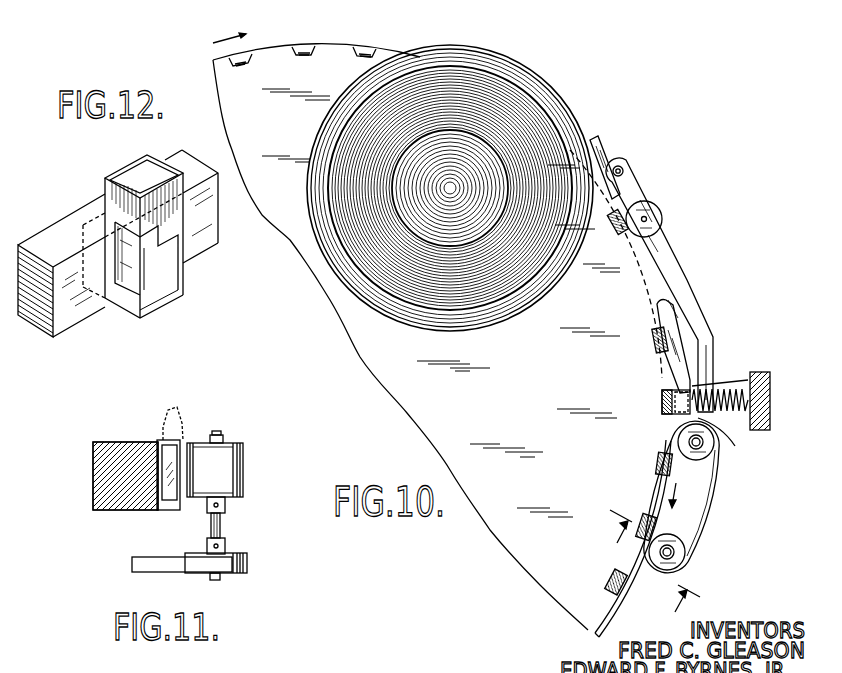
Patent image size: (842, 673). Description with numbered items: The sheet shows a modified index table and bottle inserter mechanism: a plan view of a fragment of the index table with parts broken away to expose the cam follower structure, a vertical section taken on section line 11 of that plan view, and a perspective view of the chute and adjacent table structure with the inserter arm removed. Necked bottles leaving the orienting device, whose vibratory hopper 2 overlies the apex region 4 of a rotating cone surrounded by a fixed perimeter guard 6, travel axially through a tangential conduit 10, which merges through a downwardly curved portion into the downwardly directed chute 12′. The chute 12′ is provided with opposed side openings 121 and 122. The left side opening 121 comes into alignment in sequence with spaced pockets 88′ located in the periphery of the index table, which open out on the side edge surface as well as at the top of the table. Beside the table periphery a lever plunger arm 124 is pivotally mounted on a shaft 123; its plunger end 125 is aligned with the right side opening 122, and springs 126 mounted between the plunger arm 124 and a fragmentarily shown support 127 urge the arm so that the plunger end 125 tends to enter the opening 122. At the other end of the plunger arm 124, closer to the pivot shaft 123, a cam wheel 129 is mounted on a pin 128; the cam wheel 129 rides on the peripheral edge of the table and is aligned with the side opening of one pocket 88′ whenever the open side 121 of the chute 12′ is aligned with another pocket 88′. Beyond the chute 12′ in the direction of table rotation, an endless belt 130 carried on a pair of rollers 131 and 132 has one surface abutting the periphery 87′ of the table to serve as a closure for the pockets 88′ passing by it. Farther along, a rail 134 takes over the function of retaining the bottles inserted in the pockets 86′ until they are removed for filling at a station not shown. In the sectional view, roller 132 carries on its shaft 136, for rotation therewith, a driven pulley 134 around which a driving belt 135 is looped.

In FIG. 10, the vibratory hopper 2 is at (433, 82).
In FIG. 10, the apex region 4 is at (412, 226).
In FIG. 10, the fixed perimeter guard 6 is at (546, 92).
In FIG. 10, the conduit 10 is at (596, 151).
In FIG. 10, the section line 11 is at (652, 565).
In FIG. 12, the chute 12′ is at (116, 174).
In FIG. 10, the pockets 86′ is at (430, 407).
In FIG. 12, the pockets 86′ is at (60, 221).
In FIG. 11, the pockets 86′ is at (92, 478).
In FIG. 10, the periphery 87′ is at (366, 362).
In FIG. 12, the periphery 87′ is at (197, 167).
In FIG. 11, the periphery 87′ is at (105, 440).
In FIG. 10, the spaced pockets 88′ is at (612, 580).
In FIG. 12, the spaced pockets 88′ is at (130, 262).
In FIG. 11, the spaced pockets 88′ is at (163, 445).
In FIG. 12, the side opening 121 is at (148, 264).
In FIG. 10, the side opening 122 is at (690, 397).
In FIG. 12, the side opening 122 is at (180, 282).
In FIG. 10, the shaft 123 is at (623, 170).
In FIG. 10, the lever plunger arm 124 is at (681, 282).
In FIG. 10, the plunger end 125 is at (730, 440).
In FIG. 10, the springs 126 is at (766, 391).
In FIG. 10, the support 127 is at (766, 418).
In FIG. 10, the pin 128 is at (647, 217).
In FIG. 10, the cam wheel 129 is at (662, 223).
In FIG. 10, the endless belt 130 is at (708, 505).
In FIG. 11, the endless belt 130 is at (245, 470).
In FIG. 10, the roller 131 is at (705, 450).
In FIG. 10, the roller 132 is at (685, 555).
In FIG. 11, the roller 132 is at (238, 443).
In FIG. 10, the rail 134 is at (612, 610).
In FIG. 11, the rail 134 is at (241, 553).
In FIG. 11, the driving belt 135 is at (145, 560).
In FIG. 10, the shaft 136 is at (672, 550).
In FIG. 11, the shaft 136 is at (215, 436).